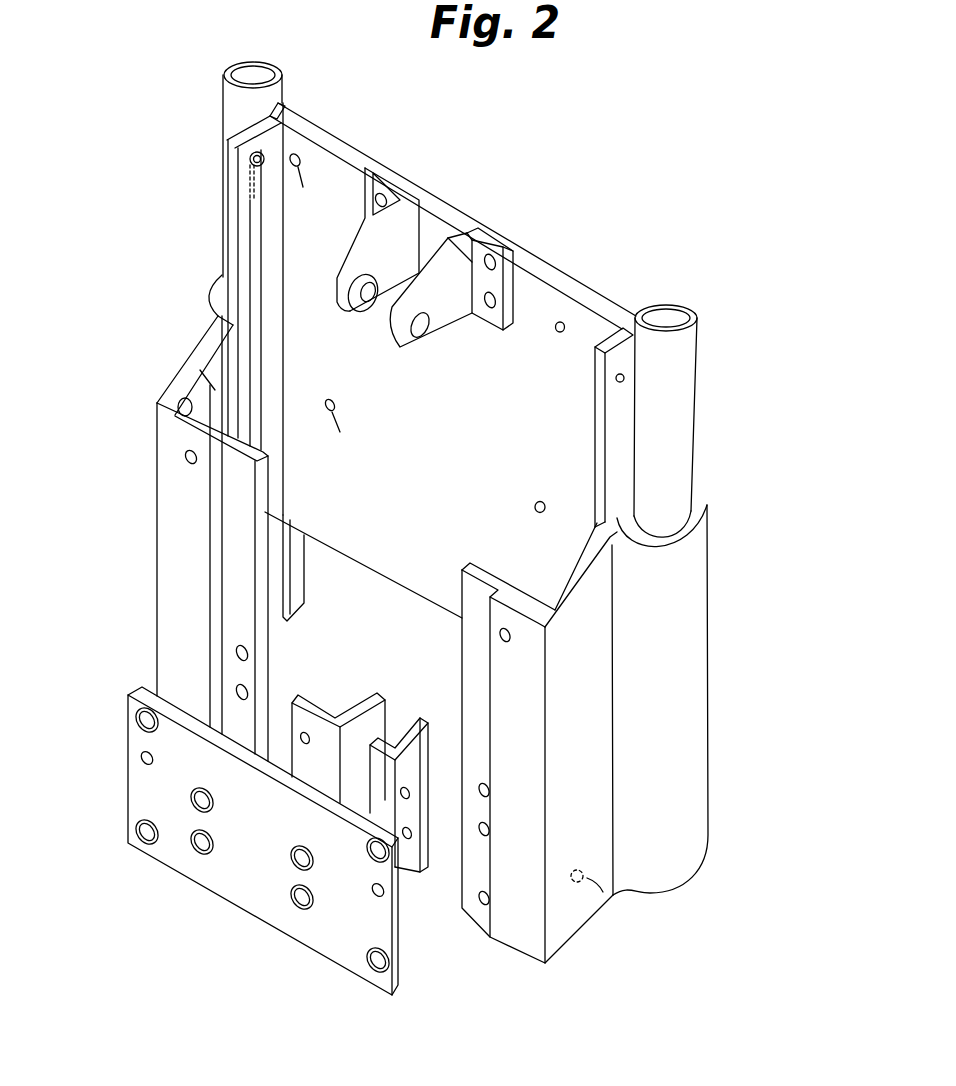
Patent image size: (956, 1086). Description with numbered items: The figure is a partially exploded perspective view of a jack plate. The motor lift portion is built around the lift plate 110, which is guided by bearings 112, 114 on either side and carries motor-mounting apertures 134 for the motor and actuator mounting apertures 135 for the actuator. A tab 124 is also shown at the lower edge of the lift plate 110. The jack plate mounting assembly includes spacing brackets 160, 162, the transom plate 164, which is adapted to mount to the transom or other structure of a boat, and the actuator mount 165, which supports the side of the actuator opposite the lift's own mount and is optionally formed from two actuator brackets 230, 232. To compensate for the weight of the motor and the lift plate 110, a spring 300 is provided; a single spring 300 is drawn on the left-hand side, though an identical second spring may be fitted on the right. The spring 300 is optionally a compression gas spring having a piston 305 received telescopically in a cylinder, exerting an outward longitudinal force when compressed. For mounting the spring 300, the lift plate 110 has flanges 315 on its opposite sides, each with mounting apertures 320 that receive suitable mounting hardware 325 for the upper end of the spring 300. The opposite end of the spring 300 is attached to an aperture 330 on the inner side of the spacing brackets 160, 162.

The lift plate 110 is at (538, 287).
The bearing 112 is at (705, 360).
The bearing 114 is at (220, 140).
The tab 124 is at (270, 592).
The motor-mounting aperture 134 is at (534, 508).
The actuator mounting aperture 135 is at (493, 250).
The spacing bracket 160 is at (562, 898).
The spacing bracket 162 is at (172, 488).
The transom plate 164 is at (325, 920).
The actuator mount 165 is at (407, 698).
The actuator bracket 230 is at (318, 700).
The actuator bracket 232 is at (402, 808).
The spring 300 is at (250, 320).
The piston 305 is at (240, 388).
The flange 315 is at (247, 195).
The mounting aperture 320 is at (248, 164).
The mounting hardware 325 is at (265, 150).
The aperture 330 is at (562, 898).